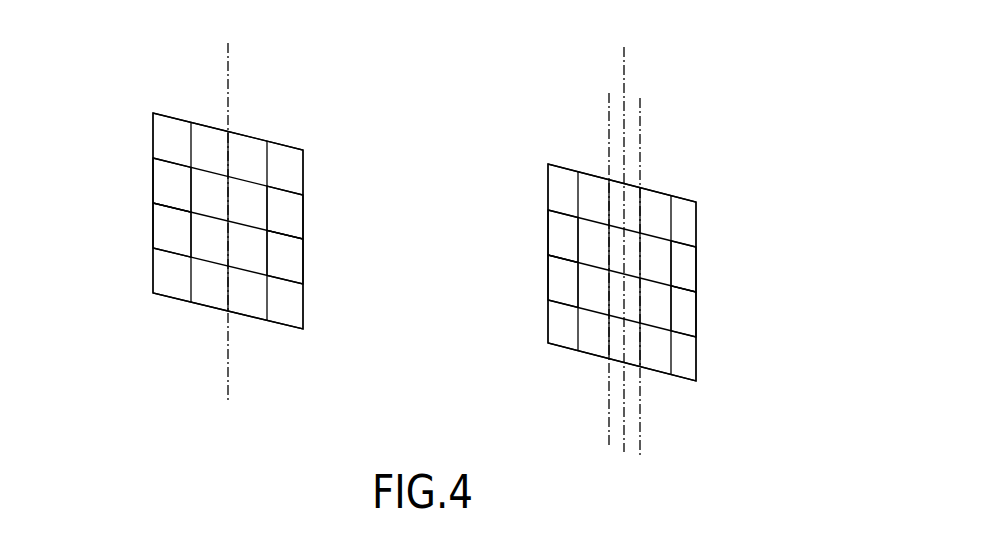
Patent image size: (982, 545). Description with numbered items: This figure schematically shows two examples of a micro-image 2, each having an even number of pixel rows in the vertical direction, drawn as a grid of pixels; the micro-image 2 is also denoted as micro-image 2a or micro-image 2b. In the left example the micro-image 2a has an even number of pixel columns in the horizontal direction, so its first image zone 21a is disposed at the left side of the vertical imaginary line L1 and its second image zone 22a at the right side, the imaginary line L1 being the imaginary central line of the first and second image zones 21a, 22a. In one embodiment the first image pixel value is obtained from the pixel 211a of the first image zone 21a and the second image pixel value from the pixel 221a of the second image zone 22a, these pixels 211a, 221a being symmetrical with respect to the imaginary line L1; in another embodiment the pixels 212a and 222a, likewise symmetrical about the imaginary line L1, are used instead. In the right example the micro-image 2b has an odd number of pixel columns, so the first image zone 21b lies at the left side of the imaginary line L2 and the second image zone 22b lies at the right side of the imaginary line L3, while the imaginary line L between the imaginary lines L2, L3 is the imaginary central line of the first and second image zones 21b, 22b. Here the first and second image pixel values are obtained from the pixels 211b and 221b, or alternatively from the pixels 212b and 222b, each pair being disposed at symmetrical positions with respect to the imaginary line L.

The micro-image 2 is at (428, 260).
The micro-image 2a is at (304, 136).
The micro-image 2b is at (685, 182).
The first image zone 21a is at (212, 310).
The second image zone 22a is at (248, 318).
The pixel 211a is at (167, 183).
The pixel 212a is at (172, 233).
The pixel 221a is at (287, 210).
The pixel 222a is at (287, 260).
The first image zone 21b is at (593, 358).
The second image zone 22b is at (663, 377).
The pixel 211b is at (563, 235).
The pixel 212b is at (563, 278).
The pixel 221b is at (678, 269).
The pixel 222b is at (683, 316).
The imaginary line L is at (624, 235).
The imaginary line L1 is at (226, 207).
The imaginary line L2 is at (600, 132).
The imaginary line L3 is at (650, 125).